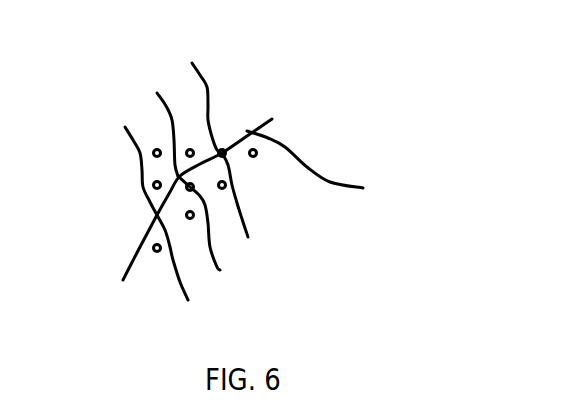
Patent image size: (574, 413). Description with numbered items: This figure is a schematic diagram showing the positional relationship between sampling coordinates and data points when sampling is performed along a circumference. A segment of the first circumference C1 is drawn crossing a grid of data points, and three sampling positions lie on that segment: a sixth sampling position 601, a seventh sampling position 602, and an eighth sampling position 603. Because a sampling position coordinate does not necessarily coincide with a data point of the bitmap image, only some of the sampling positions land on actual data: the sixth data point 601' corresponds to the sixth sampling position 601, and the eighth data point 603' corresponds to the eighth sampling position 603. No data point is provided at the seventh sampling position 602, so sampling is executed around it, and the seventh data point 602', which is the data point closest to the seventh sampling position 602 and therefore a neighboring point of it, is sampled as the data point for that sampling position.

The sixth sampling position 601 is at (126, 151).
The sixth data point 601' is at (183, 278).
The seventh sampling position 602 is at (151, 114).
The seventh data point 602' is at (217, 244).
The eighth sampling position 603 is at (192, 86).
The eighth data point 603' is at (251, 214).
The first circumference C1 is at (262, 199).